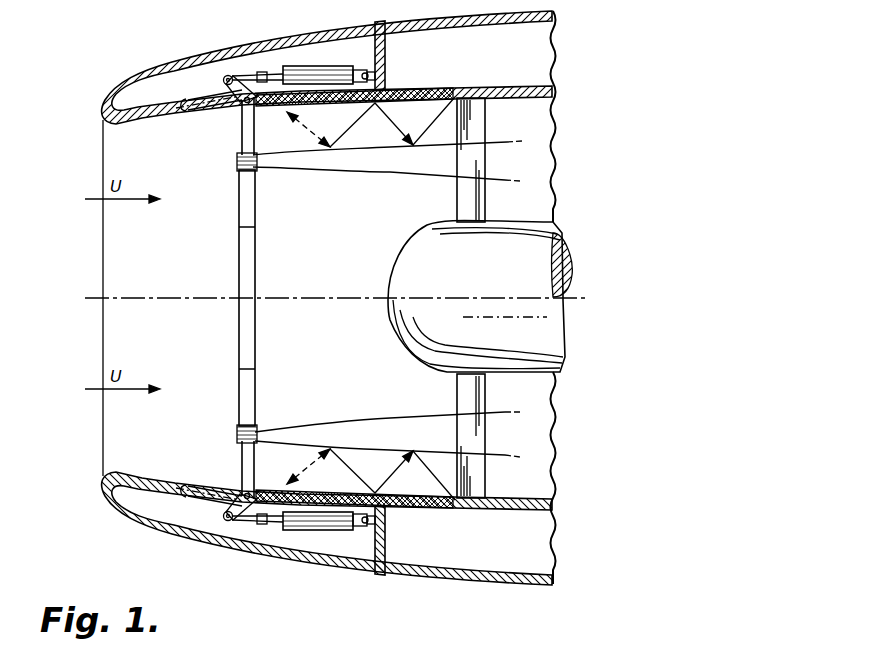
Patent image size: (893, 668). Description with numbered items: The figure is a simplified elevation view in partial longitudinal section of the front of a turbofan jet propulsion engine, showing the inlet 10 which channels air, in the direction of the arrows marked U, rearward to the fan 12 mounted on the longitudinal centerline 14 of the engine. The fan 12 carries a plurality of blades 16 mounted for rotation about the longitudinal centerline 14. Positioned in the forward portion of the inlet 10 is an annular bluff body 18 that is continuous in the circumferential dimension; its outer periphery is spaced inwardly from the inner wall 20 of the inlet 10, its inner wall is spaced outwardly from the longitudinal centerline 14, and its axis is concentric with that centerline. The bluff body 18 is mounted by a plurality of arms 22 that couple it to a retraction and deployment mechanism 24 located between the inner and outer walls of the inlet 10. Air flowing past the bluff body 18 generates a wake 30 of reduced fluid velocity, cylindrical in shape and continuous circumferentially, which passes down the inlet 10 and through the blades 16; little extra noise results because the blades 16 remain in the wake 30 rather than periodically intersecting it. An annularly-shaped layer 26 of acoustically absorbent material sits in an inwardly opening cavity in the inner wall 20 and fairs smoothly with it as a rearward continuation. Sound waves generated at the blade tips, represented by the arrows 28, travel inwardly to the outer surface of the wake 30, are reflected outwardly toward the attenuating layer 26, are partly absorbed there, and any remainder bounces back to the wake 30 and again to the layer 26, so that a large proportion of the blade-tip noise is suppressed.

The inlet 10 is at (212, 41).
The fan 12 is at (408, 241).
The longitudinal centerline 14 is at (277, 297).
The blades 16 is at (487, 122).
The annular bluff body 18 is at (243, 262).
The inner wall 20 is at (163, 123).
The arms 22 is at (243, 128).
The retraction and deployment mechanism 24 is at (250, 64).
The acoustically absorbent layer 26 is at (410, 88).
The acoustic waves 28 is at (437, 117).
The wake 30 is at (341, 165).